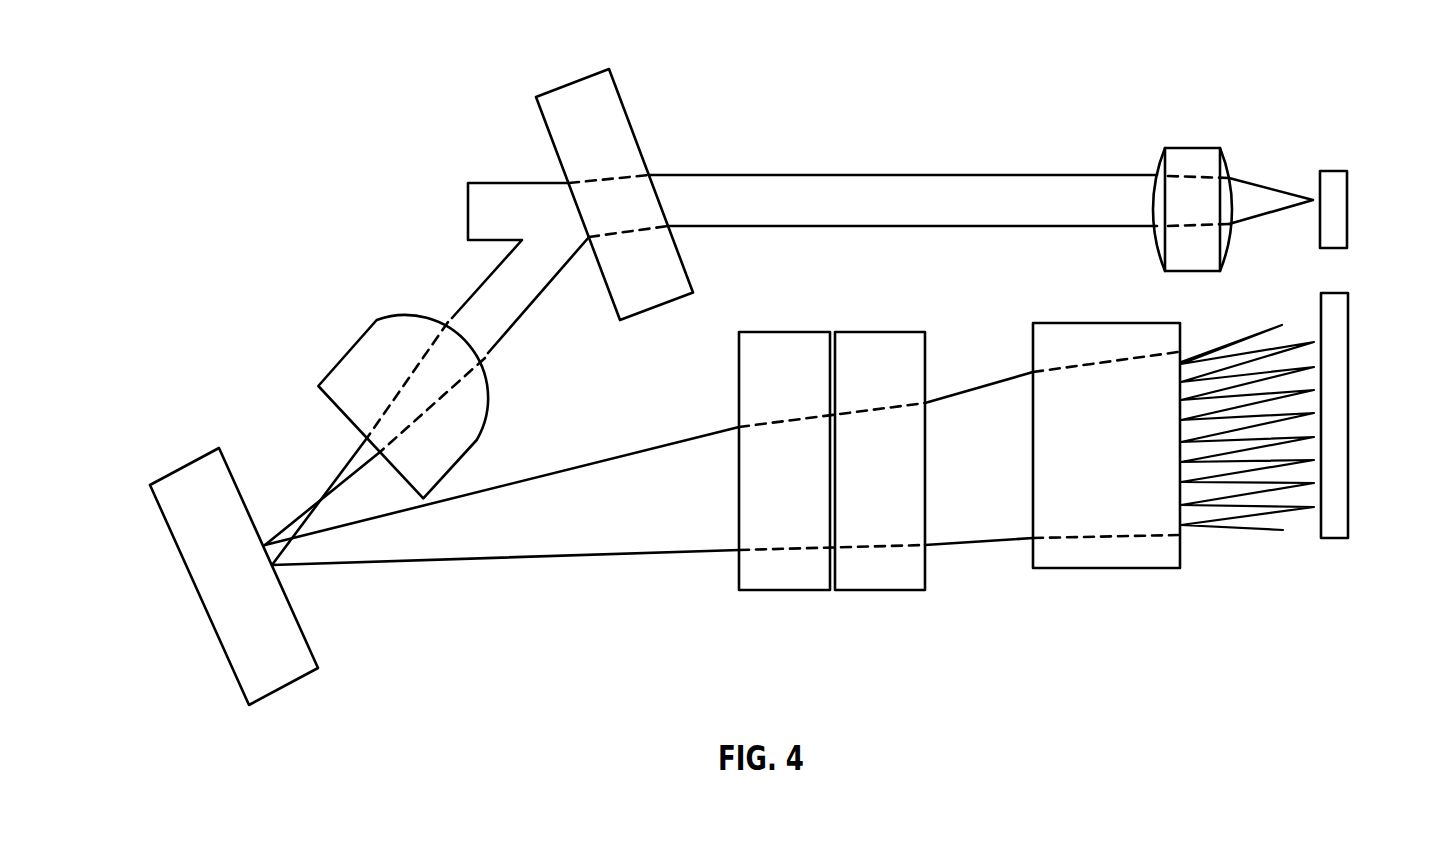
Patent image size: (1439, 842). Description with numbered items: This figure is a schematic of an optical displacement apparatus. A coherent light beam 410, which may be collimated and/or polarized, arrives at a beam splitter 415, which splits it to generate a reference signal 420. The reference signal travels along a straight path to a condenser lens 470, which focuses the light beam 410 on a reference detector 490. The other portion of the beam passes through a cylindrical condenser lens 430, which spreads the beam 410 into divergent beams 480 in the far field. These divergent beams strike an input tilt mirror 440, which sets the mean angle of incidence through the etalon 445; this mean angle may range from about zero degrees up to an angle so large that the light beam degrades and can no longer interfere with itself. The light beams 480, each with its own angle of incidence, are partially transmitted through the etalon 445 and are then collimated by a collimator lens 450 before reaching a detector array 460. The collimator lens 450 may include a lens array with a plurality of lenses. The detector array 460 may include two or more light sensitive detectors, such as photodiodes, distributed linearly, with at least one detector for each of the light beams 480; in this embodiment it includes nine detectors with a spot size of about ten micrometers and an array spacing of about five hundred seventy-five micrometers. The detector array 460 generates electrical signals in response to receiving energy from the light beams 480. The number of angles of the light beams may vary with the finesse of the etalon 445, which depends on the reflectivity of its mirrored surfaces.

The coherent light beam 410 is at (494, 183).
The beam splitter 415 is at (573, 78).
The reference signal 420 is at (783, 175).
The cylindrical condenser lens 430 is at (393, 313).
The input tilt mirror 440 is at (184, 463).
The etalon 445 is at (765, 592).
The collimator lens 450 is at (1140, 570).
The detector array 460 is at (1349, 360).
The condenser lens 470 is at (1200, 148).
The divergent light beams 480 is at (578, 558).
The reference detector 490 is at (1348, 203).